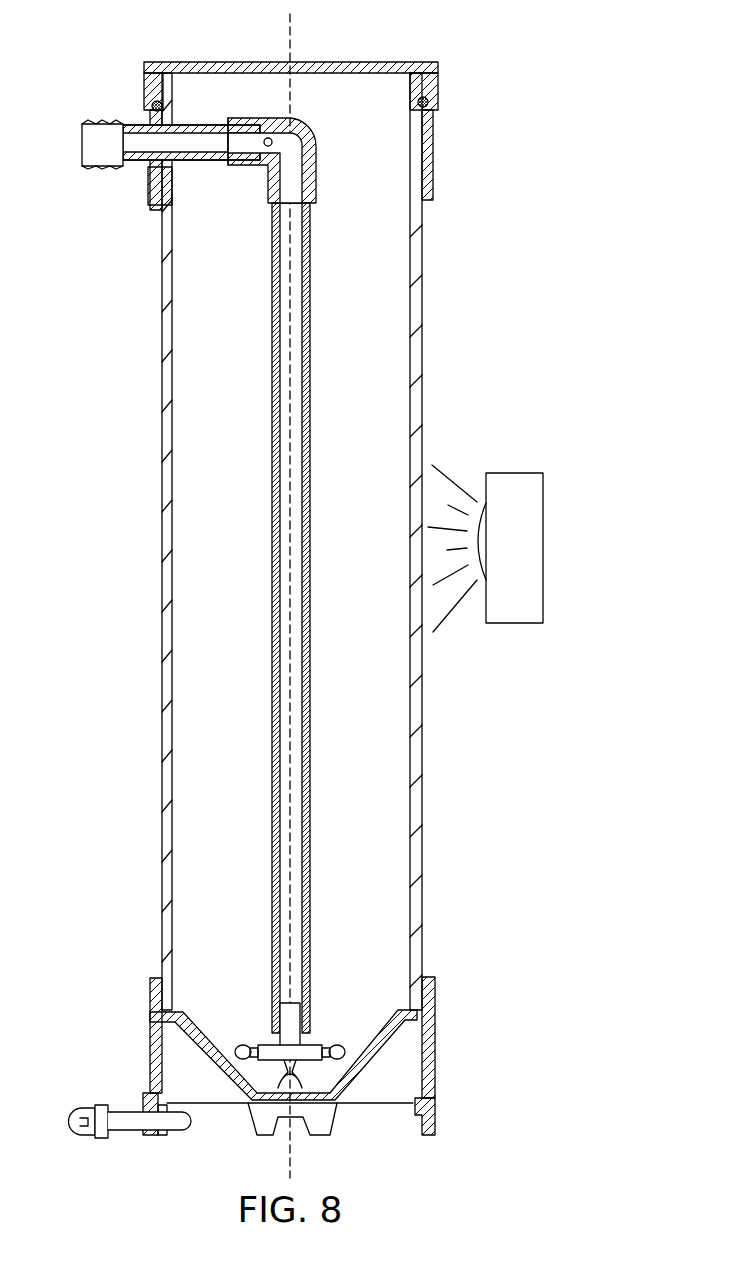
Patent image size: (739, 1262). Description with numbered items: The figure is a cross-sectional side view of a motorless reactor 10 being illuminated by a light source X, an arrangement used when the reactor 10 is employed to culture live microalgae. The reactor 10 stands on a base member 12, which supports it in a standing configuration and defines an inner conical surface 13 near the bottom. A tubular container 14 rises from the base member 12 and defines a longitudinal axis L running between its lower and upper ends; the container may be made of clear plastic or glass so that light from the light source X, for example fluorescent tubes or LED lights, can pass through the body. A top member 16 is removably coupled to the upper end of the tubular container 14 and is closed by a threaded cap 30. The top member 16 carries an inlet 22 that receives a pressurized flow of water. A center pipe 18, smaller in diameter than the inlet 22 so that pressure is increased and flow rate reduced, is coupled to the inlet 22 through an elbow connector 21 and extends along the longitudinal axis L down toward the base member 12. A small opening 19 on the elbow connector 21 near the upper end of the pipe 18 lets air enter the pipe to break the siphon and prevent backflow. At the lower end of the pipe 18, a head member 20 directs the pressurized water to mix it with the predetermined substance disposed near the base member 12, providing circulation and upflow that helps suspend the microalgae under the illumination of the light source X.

The motorless reactor 10 is at (98, 540).
The base member 12 is at (432, 1087).
The inner conical surface 13 is at (378, 1035).
The tubular container 14 is at (422, 867).
The top member 16 is at (433, 140).
The pipe 18 is at (310, 272).
The opening 19 is at (266, 138).
The head member 20 is at (258, 1067).
The elbow connector 21 is at (314, 146).
The inlet 22 is at (90, 110).
The cap 30 is at (218, 62).
The longitudinal axis L is at (294, 44).
The light source X is at (528, 548).